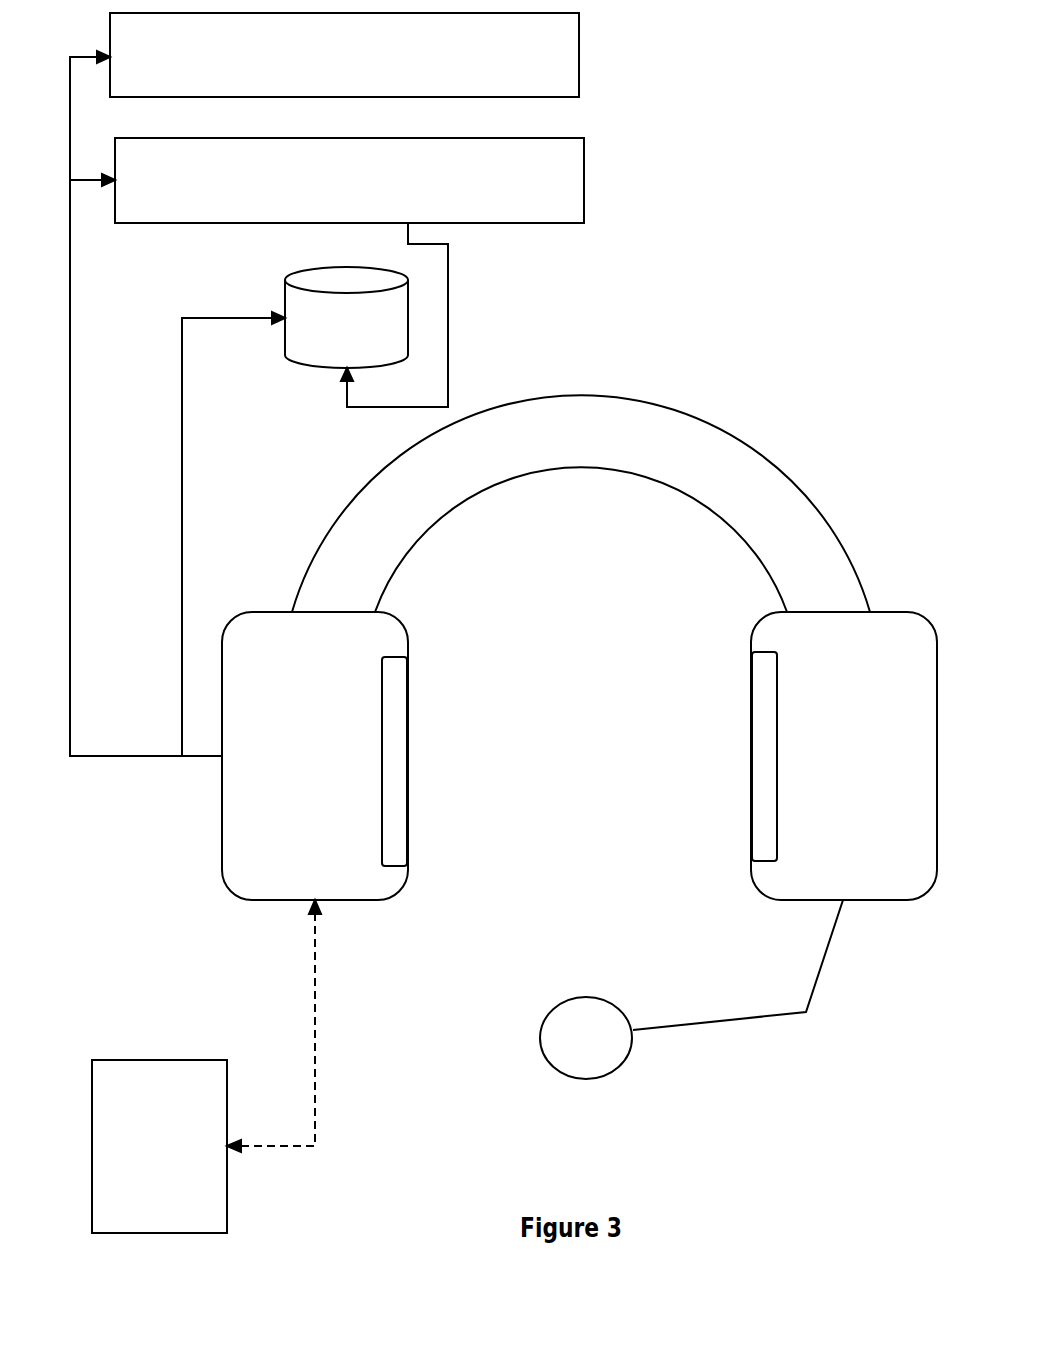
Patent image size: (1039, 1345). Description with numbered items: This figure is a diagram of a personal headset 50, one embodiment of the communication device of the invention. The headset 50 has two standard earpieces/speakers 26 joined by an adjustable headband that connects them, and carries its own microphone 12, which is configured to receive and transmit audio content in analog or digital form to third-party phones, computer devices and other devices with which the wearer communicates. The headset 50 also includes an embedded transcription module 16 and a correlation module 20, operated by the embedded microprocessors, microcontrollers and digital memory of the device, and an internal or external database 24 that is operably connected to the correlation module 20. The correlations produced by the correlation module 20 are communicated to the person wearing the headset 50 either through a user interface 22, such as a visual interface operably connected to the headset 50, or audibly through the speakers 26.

The transcription module 16 is at (371, 55).
The correlation module 20 is at (373, 180).
The database 24 is at (346, 317).
The personal headset 50 is at (750, 408).
The earpieces/speakers 26 is at (579, 756).
The microphone 12 is at (691, 989).
The user interface 22 is at (126, 1146).